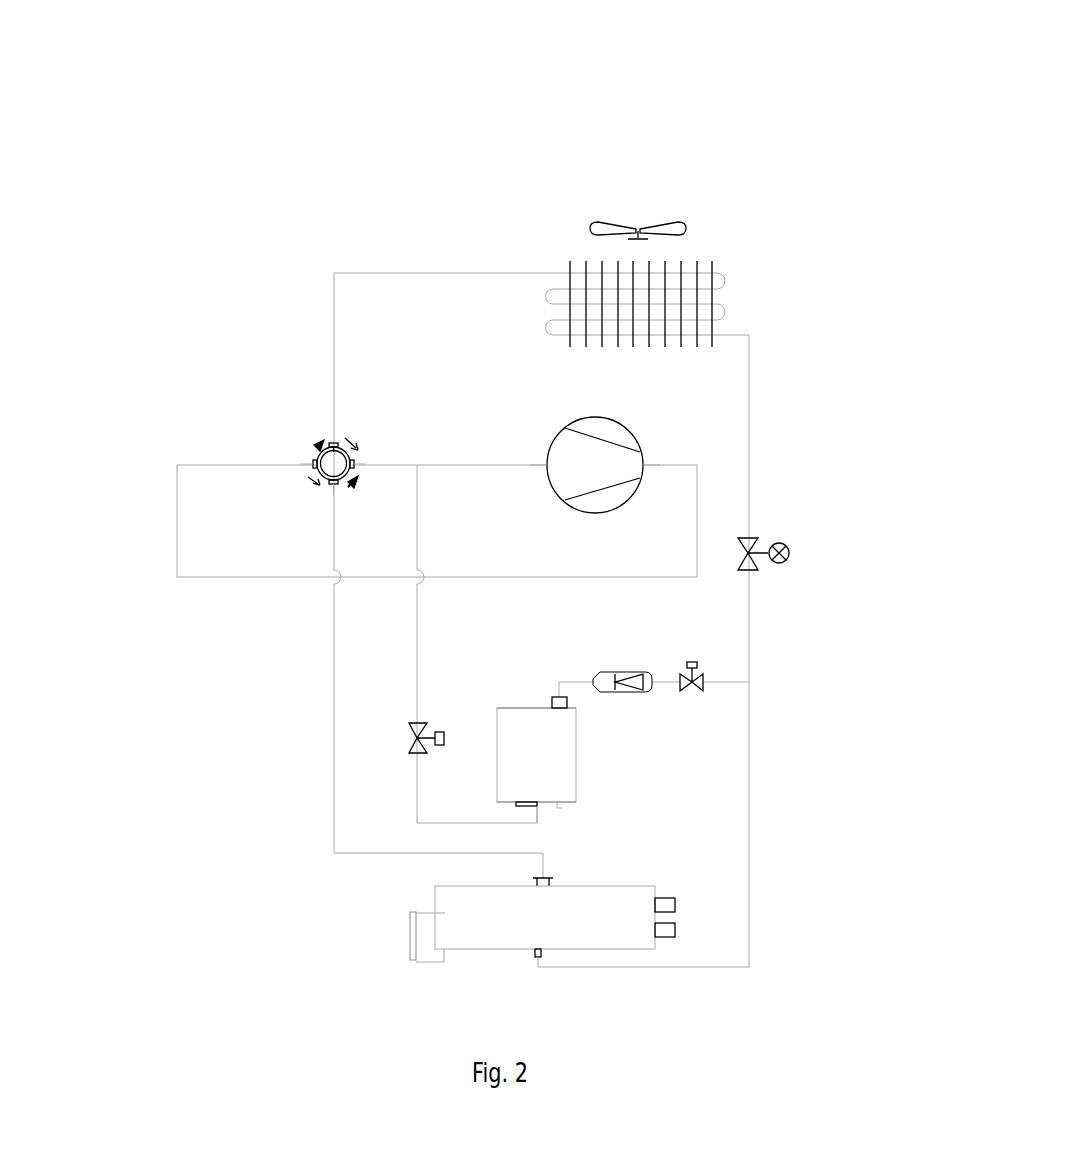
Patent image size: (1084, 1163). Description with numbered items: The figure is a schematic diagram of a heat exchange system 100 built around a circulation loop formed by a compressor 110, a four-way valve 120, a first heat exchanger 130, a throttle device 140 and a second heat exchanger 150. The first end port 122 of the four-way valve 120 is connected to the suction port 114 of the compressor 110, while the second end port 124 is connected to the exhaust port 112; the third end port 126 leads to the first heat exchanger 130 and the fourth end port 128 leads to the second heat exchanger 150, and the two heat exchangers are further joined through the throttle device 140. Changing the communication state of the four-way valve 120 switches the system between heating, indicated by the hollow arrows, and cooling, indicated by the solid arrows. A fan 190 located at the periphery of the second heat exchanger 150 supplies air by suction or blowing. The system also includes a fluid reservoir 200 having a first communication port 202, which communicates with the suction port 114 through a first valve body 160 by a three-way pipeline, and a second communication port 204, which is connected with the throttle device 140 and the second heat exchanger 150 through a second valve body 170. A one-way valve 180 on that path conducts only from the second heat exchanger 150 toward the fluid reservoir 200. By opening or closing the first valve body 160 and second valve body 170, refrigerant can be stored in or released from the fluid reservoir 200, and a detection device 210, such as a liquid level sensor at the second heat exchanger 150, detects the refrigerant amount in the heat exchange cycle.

The heat exchange system 100 is at (488, 178).
The compressor 110 is at (610, 431).
The exhaust port 112 is at (643, 465).
The suction port 114 is at (545, 464).
The four-way valve 120 is at (316, 447).
The first end port 122 is at (354, 470).
The second end port 124 is at (315, 465).
The third end port 126 is at (333, 458).
The fourth end port 128 is at (333, 485).
The first heat exchanger 130 is at (677, 295).
The throttle device 140 is at (748, 565).
The second heat exchanger 150 is at (620, 935).
The first valve body 160 is at (418, 727).
The second valve body 170 is at (700, 685).
The one-way valve 180 is at (633, 682).
The fan 190 is at (683, 231).
The fluid reservoir 200 is at (563, 770).
The first communication port 202 is at (537, 803).
The second communication port 204 is at (558, 702).
The detection device 210 is at (413, 957).